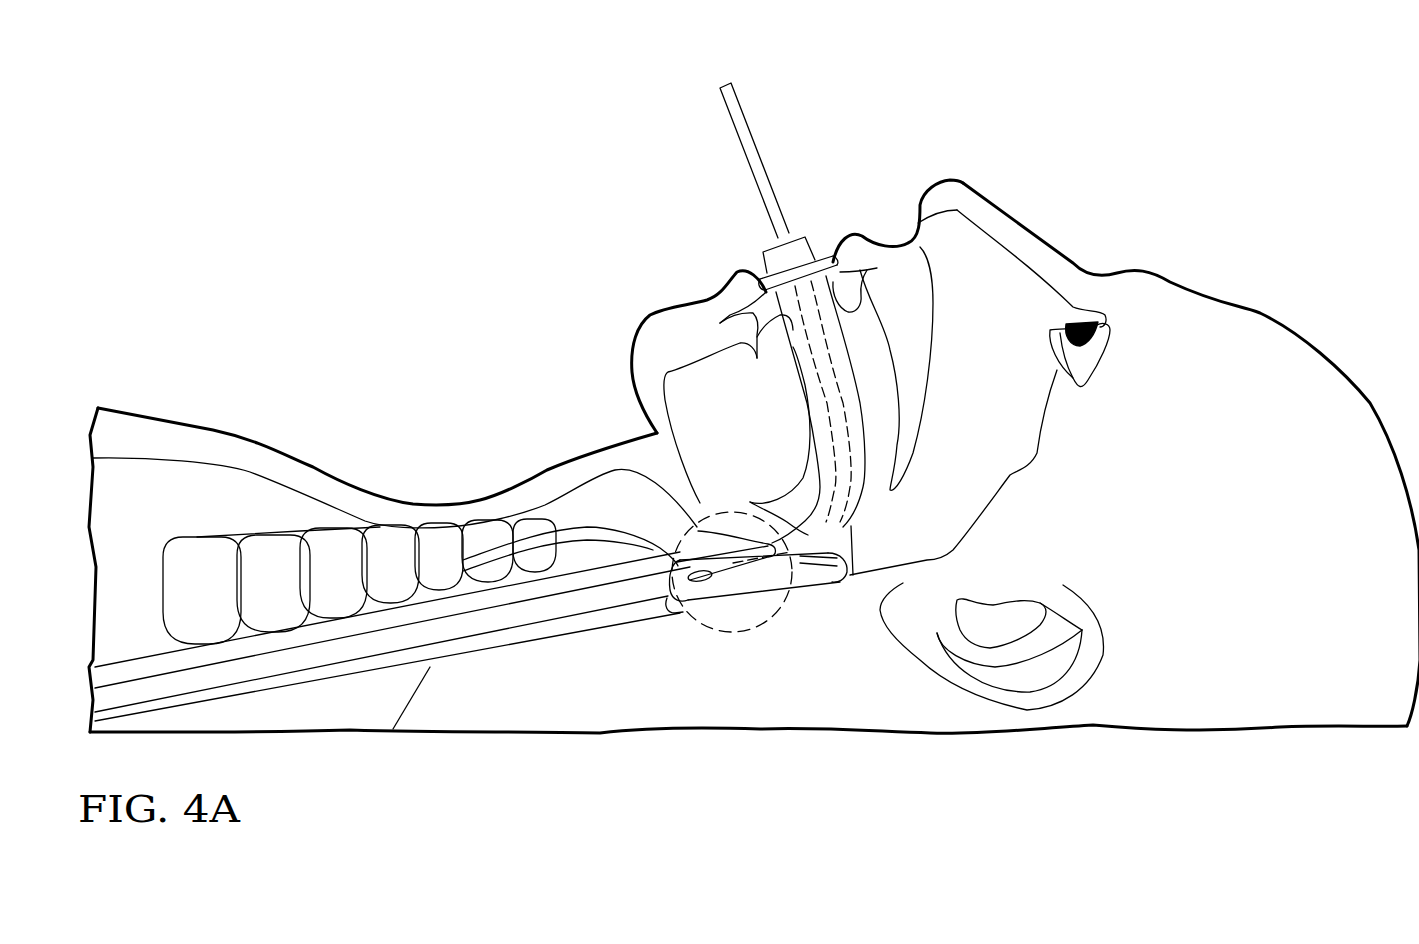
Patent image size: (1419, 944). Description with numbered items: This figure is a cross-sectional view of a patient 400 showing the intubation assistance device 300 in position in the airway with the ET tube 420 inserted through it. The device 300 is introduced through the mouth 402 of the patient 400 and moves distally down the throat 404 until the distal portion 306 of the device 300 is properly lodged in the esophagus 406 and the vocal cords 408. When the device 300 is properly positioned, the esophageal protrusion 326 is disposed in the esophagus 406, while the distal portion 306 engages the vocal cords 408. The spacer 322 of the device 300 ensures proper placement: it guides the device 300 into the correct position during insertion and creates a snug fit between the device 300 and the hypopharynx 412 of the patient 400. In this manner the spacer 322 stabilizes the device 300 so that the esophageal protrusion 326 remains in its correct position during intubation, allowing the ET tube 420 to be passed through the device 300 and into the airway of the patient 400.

The intubation assistance device 300 is at (823, 230).
The distal portion 306 is at (707, 580).
The spacer 322 is at (860, 575).
The esophageal protrusion 326 is at (685, 600).
The patient 400 is at (1283, 270).
The mouth 402 is at (767, 293).
The throat 404 is at (603, 395).
The esophagus 406 is at (594, 620).
The vocal cords 408 is at (685, 600).
The hypopharynx 412 is at (890, 543).
The ET tube 420 is at (743, 120).